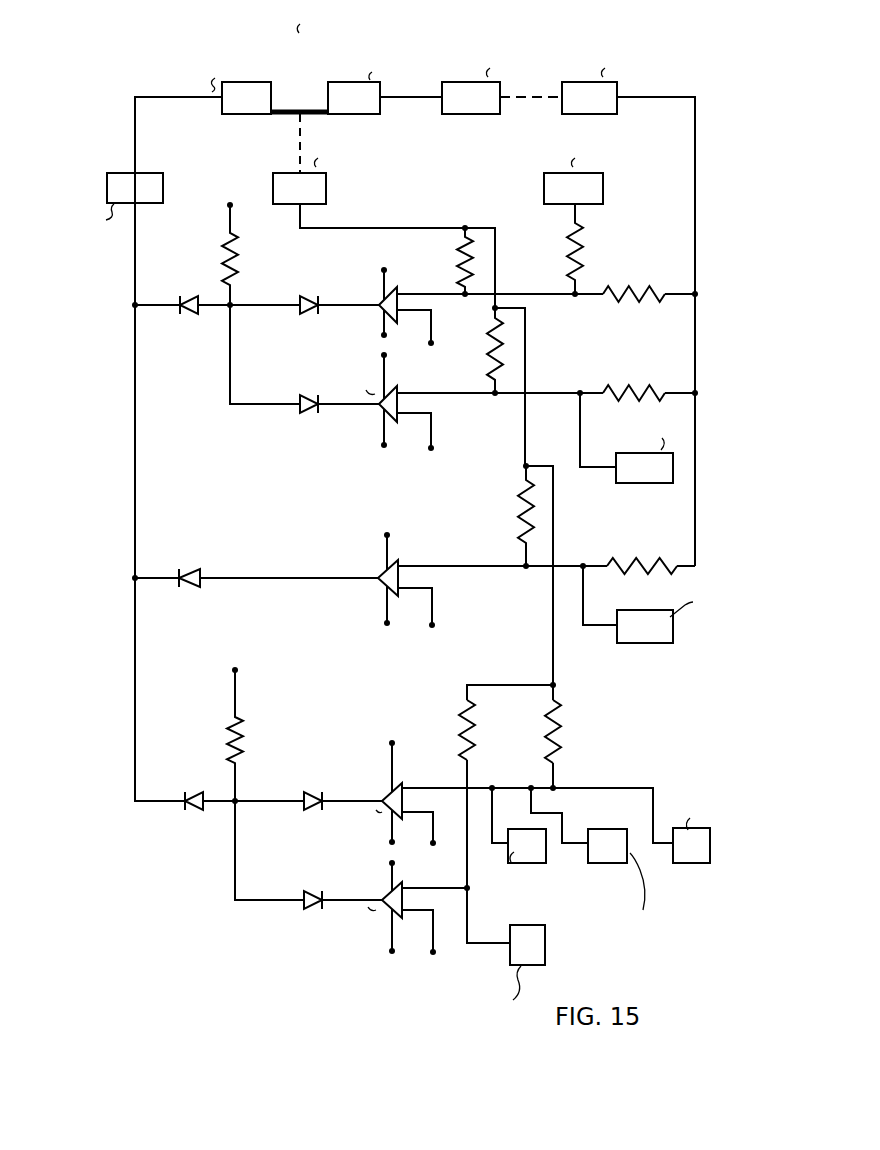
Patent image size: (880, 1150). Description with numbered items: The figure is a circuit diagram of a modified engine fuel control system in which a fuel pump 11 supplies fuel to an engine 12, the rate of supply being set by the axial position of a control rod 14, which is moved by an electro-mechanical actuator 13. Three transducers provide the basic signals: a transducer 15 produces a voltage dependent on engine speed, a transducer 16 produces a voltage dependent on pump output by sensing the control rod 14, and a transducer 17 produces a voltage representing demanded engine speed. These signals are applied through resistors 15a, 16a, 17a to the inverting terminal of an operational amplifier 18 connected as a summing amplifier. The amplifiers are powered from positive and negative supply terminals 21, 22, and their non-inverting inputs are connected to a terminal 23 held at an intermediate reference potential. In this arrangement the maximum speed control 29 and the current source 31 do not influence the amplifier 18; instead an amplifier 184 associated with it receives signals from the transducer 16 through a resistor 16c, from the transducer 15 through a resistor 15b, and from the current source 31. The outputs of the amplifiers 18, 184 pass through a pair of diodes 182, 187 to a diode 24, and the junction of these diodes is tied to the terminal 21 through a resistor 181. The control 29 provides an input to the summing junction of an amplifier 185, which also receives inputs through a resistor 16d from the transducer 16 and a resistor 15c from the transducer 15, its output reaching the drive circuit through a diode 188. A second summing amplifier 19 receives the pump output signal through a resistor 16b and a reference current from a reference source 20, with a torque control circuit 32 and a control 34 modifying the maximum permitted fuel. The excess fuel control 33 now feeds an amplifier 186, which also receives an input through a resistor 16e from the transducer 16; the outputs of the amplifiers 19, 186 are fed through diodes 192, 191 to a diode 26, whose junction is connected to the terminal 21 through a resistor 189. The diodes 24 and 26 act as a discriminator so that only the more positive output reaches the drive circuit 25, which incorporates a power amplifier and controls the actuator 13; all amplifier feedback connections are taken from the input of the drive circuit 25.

The fuel pump 11 is at (352, 92).
The engine 12 is at (468, 92).
The electro-mechanical actuator 13 is at (247, 92).
The control rod 14 is at (290, 110).
The transducer 15 is at (578, 93).
The resistor 15a is at (620, 300).
The resistor 15b is at (618, 400).
The resistor 15c is at (640, 560).
The transducer 16 is at (318, 192).
The resistor 16a is at (472, 255).
The resistor 16b is at (562, 745).
The resistor 16c is at (500, 368).
The resistor 16d is at (522, 495).
The resistor 16e is at (460, 720).
The transducer 17 is at (590, 183).
The resistor 17a is at (562, 248).
The operational amplifier 18 is at (401, 287).
The operational amplifier 19 is at (379, 792).
The reference source 20 is at (687, 855).
The supply terminal 21 is at (230, 203).
The supply terminal 22 is at (384, 335).
The terminal 23 is at (431, 343).
The diode 24 is at (192, 323).
The drive circuit 25 is at (130, 178).
The diode 26 is at (192, 783).
The control 29 is at (648, 635).
The current source 31 is at (652, 473).
The torque control circuit 32 is at (600, 857).
The excess fuel control 33 is at (533, 958).
The control 34 is at (518, 855).
The resistor 181 is at (240, 270).
The diode 182 is at (305, 300).
The amplifier 184 is at (374, 418).
The amplifier 185 is at (374, 570).
The amplifier 186 is at (383, 915).
The diode 187 is at (310, 415).
The diode 188 is at (200, 567).
The resistor 189 is at (247, 750).
The diode 191 is at (305, 913).
The diode 192 is at (312, 783).